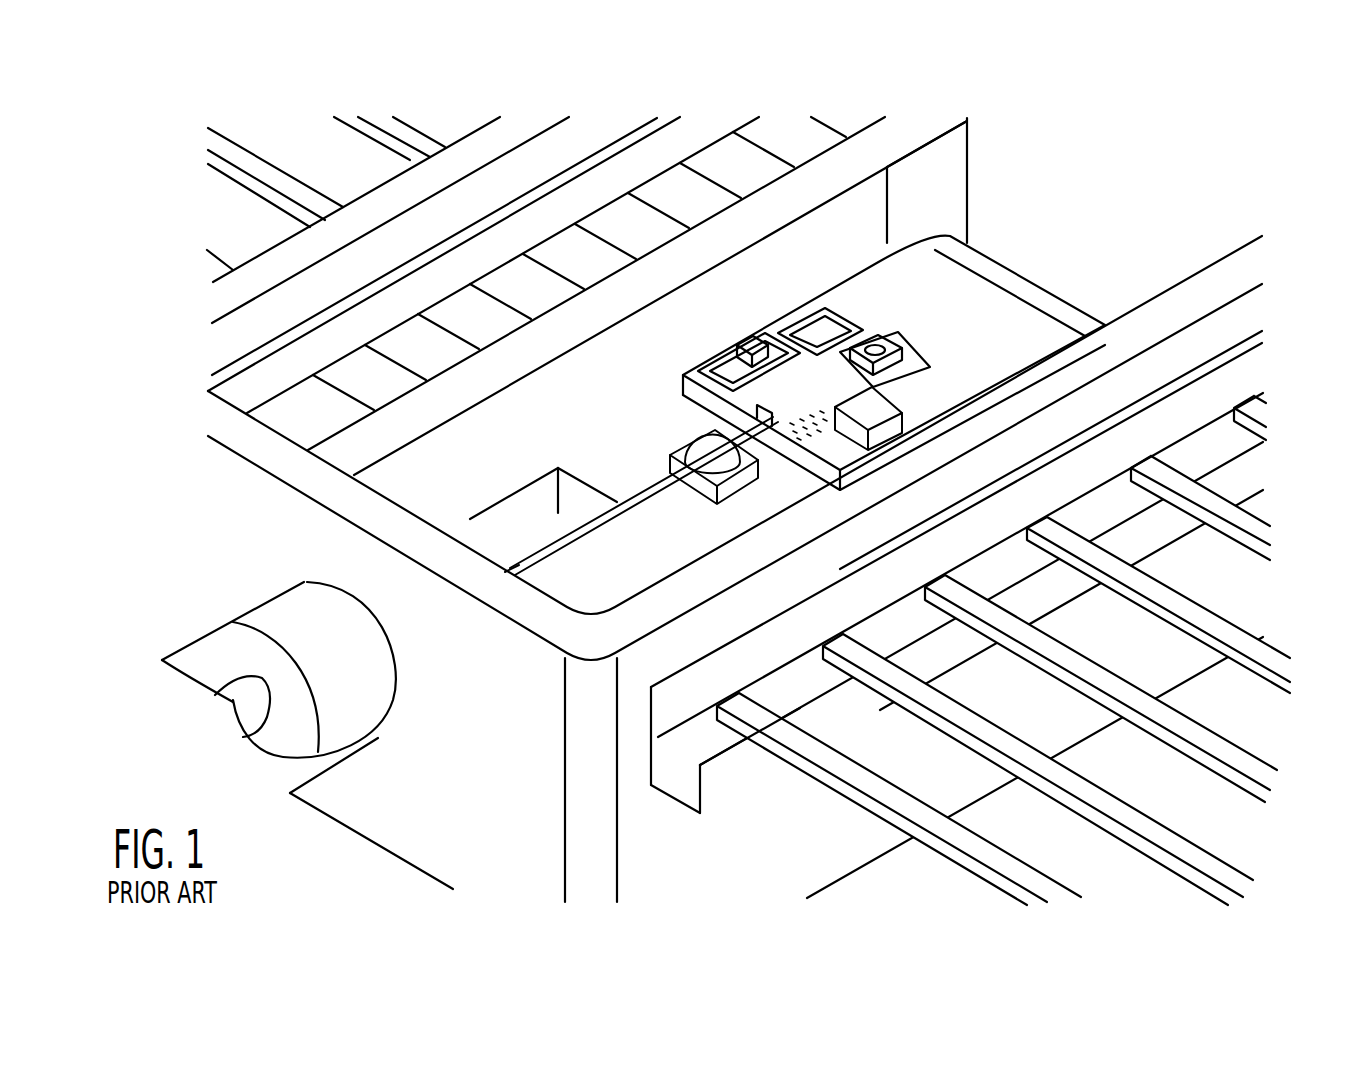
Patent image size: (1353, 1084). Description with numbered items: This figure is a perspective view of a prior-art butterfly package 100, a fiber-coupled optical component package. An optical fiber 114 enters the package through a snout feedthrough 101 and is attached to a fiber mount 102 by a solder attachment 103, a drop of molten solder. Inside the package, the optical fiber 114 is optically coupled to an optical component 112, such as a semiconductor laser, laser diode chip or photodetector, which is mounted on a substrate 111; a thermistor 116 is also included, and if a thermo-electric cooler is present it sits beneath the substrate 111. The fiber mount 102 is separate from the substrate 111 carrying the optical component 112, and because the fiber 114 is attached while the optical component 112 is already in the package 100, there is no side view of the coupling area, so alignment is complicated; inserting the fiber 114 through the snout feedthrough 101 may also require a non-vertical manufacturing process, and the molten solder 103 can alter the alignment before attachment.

The butterfly package 100 is at (1152, 236).
The snout feedthrough 101 is at (197, 640).
The fiber mount 102 is at (670, 459).
The solder attachment 103 is at (713, 457).
The substrate 111 is at (883, 312).
The optical component 112 is at (825, 377).
The optical fiber 114 is at (522, 558).
The thermistor 116 is at (873, 403).